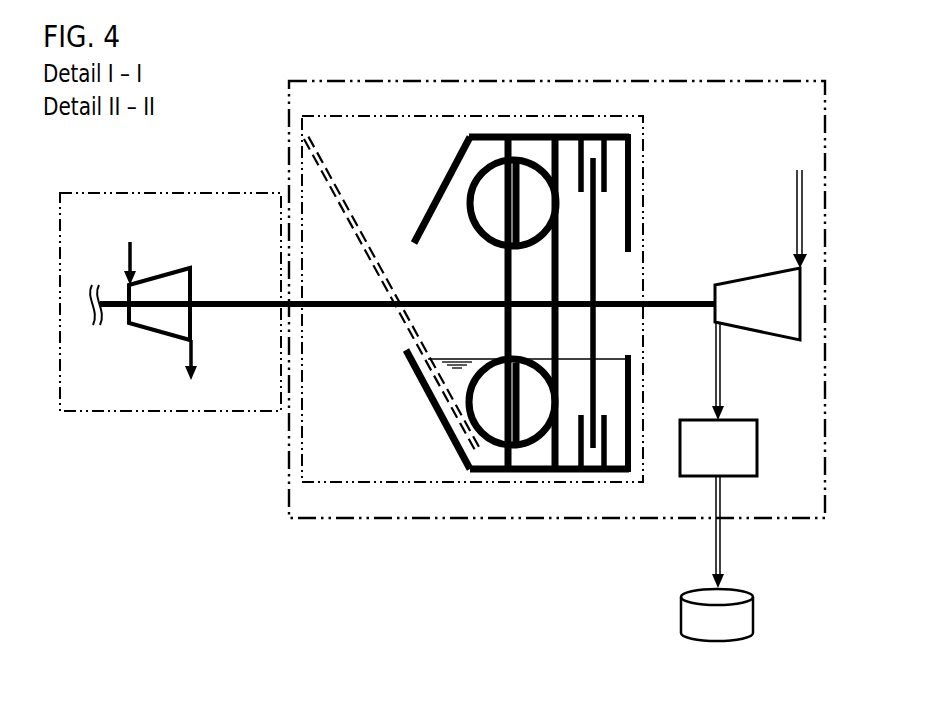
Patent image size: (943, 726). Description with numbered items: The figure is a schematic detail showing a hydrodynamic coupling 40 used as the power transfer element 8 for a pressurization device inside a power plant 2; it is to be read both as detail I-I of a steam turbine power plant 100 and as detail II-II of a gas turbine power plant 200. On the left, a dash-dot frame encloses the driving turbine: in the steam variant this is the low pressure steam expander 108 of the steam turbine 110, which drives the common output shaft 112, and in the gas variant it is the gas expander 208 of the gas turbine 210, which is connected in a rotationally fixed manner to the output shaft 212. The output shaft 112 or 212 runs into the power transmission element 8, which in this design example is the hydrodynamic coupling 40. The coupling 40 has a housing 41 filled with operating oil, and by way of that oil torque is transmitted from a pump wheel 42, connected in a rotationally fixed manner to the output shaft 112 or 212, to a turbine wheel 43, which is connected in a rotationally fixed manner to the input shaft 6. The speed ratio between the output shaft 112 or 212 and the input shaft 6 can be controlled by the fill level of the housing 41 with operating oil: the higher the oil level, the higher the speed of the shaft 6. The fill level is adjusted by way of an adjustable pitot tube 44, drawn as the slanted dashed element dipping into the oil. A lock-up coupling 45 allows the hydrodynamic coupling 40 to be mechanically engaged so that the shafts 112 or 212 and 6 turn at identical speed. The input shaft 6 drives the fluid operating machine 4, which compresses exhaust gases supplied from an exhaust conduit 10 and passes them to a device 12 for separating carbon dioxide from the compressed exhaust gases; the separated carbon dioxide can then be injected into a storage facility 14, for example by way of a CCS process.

The power plant 2 is at (777, 81).
The fluid operating machine 4 is at (756, 344).
The input shaft 6 is at (407, 252).
The power transmission element 8 is at (387, 116).
The exhaust conduit 10 is at (797, 222).
The device for separating carbon dioxide 12 is at (718, 504).
The storage facility 14 is at (717, 615).
The hydrodynamic coupling 40 is at (481, 244).
The housing 41 is at (422, 396).
The pump wheel 42 is at (461, 200).
The turbine wheel 43 is at (546, 165).
The adjustable pitot tube 44 is at (398, 331).
The lock-up coupling 45 is at (593, 124).
The steam turbine power plant 100 is at (438, 328).
The gas turbine power plant 200 is at (438, 328).
The low pressure steam expander 108 is at (143, 366).
The gas expander 208 is at (160, 336).
The steam turbine 110 is at (170, 345).
The gas turbine 210 is at (180, 411).
The output shaft 112 is at (407, 252).
The output shaft 212 is at (263, 296).